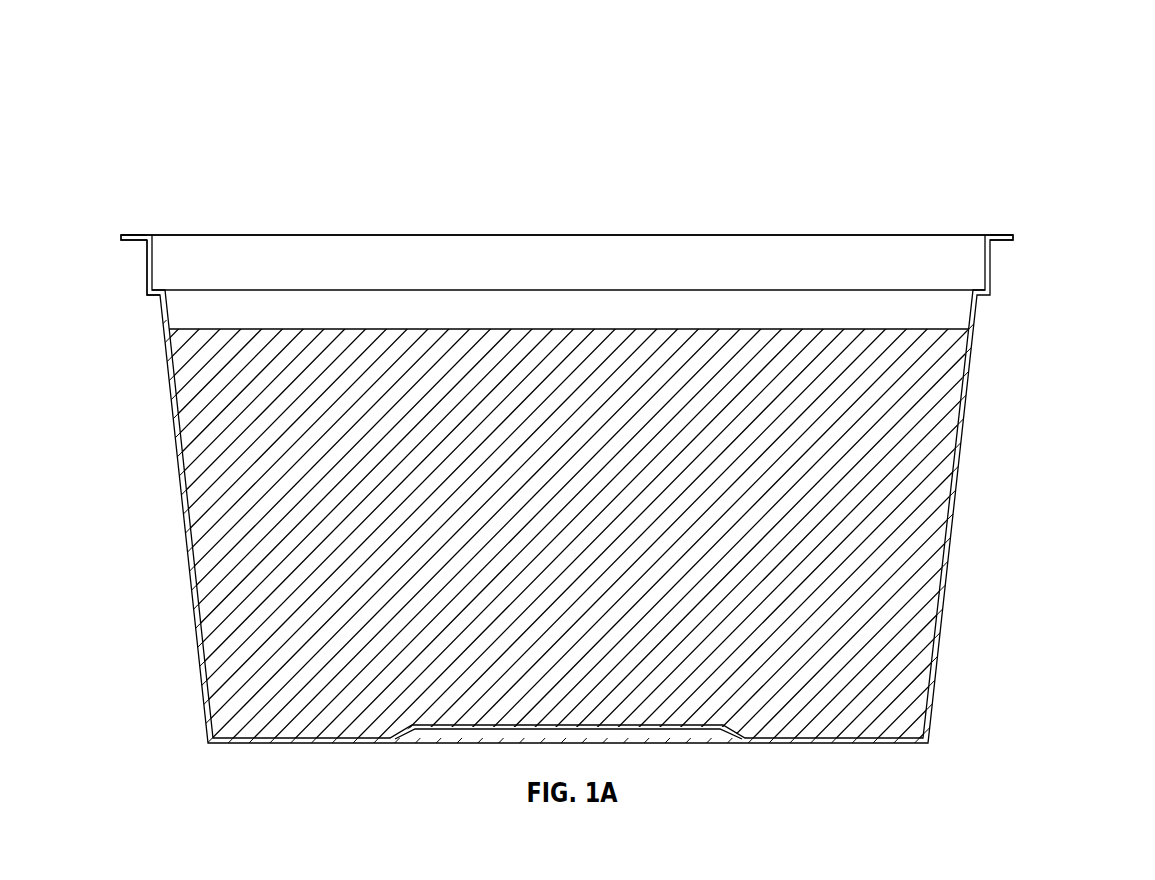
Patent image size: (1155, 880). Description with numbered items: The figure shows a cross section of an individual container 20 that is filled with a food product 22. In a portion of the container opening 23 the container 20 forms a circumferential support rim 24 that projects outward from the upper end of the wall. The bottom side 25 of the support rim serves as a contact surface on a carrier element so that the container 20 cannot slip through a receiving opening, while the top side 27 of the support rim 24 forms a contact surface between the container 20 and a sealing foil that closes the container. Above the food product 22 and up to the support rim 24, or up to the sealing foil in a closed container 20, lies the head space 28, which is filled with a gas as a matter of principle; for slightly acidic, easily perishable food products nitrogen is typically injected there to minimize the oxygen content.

The individual container 20 is at (567, 388).
The food product 22 is at (854, 513).
The container opening 23 is at (509, 208).
The support rim 24 is at (1031, 235).
The bottom side of the support rim 25 is at (132, 238).
The top side of the support rim 27 is at (132, 235).
The head space 28 is at (944, 312).